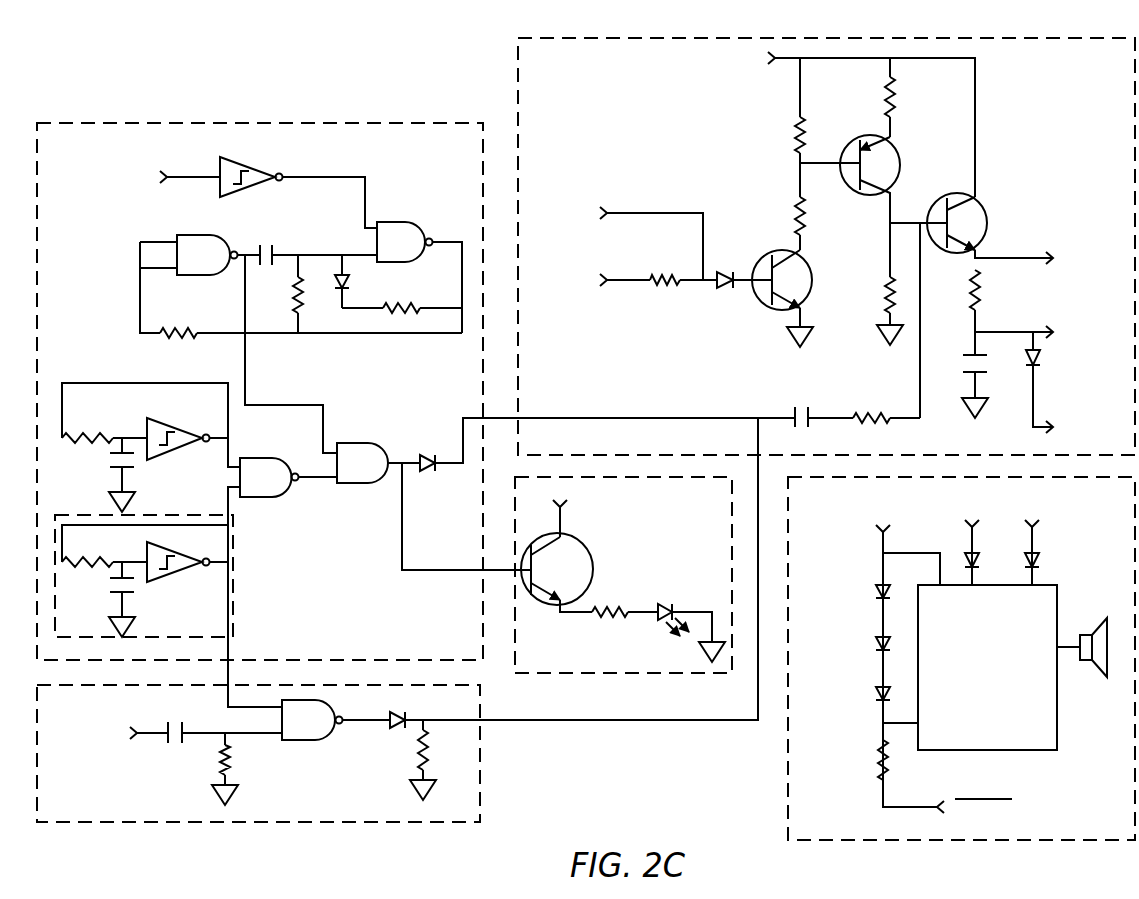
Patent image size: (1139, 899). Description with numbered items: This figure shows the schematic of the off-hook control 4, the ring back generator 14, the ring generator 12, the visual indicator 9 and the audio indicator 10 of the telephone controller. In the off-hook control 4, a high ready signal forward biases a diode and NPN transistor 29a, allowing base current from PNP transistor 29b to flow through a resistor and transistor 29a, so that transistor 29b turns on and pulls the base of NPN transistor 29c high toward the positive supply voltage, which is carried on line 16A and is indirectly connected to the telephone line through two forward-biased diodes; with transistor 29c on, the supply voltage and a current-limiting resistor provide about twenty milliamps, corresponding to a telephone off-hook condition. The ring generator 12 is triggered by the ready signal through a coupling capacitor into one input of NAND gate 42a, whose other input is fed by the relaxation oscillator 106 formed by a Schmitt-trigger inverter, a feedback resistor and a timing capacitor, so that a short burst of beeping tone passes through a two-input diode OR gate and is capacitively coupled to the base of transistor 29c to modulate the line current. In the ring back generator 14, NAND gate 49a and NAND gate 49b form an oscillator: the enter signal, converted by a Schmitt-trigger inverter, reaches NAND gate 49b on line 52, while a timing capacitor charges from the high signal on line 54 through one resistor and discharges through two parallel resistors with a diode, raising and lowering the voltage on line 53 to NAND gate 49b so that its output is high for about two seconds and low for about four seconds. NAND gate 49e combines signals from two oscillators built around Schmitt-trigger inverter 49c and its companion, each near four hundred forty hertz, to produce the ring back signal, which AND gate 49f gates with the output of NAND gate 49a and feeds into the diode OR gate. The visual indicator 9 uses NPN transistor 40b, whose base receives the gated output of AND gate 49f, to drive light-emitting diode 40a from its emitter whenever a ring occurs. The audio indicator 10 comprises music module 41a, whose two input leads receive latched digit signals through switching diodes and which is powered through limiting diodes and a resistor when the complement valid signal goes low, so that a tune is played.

The off-hook control 4 is at (519, 58).
The ring back generator 14 is at (399, 123).
The ring generator 12 is at (408, 822).
The visual indicator 9 is at (750, 687).
The audio indicator 10 is at (788, 818).
The NAND gate 49a is at (198, 275).
The NAND gate 49b is at (393, 214).
The Schmitt-trigger inverter 49c is at (192, 452).
The NAND gate 49e is at (265, 497).
The AND gate 49f is at (357, 483).
The inverted enter signal line 52 is at (330, 192).
The line 53 is at (320, 254).
The line 54 is at (329, 347).
The relaxation oscillator 106 is at (233, 570).
The NAND gate 42a is at (310, 740).
The NPN transistor 29a is at (770, 305).
The PNP transistor 29b is at (855, 193).
The NPN transistor 29c is at (970, 195).
The line 16A is at (920, 58).
The light-emitting diode 40a is at (655, 597).
The NPN transistor 40b is at (577, 548).
The music module 41a is at (1057, 622).